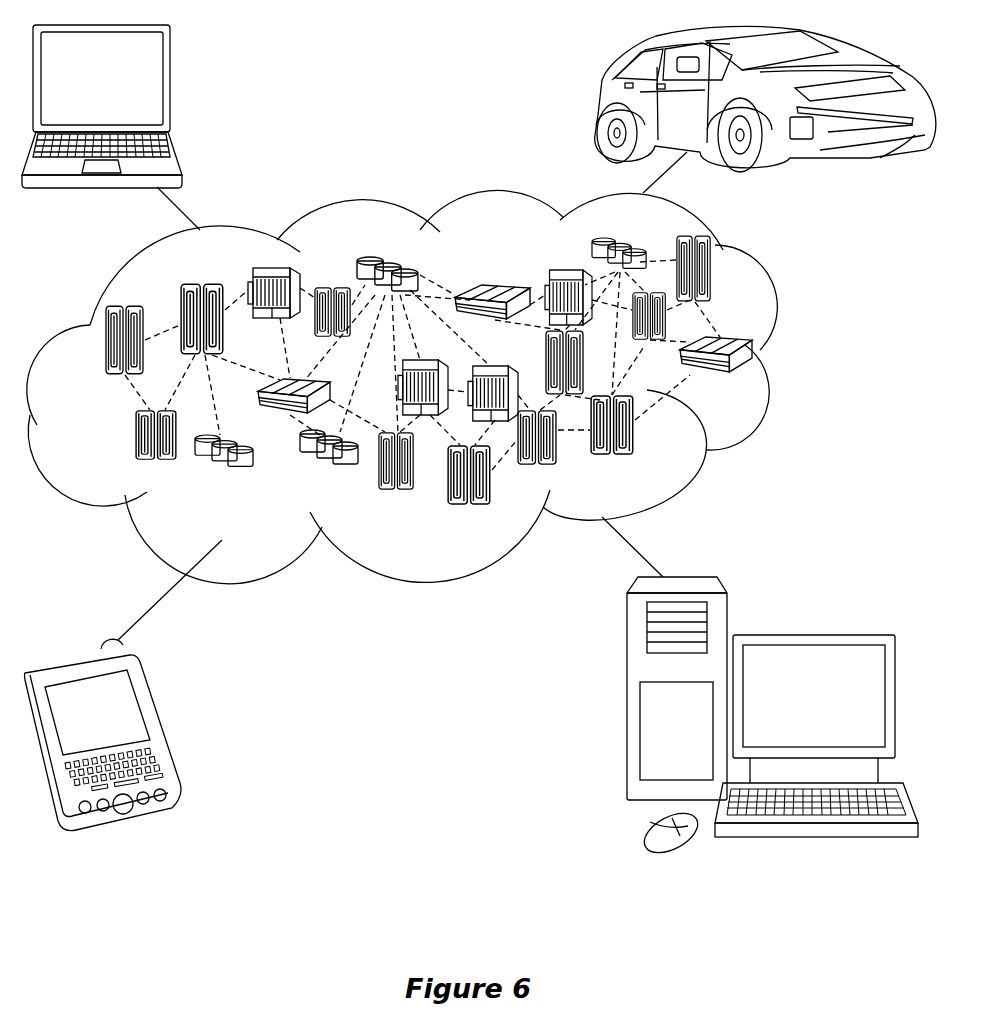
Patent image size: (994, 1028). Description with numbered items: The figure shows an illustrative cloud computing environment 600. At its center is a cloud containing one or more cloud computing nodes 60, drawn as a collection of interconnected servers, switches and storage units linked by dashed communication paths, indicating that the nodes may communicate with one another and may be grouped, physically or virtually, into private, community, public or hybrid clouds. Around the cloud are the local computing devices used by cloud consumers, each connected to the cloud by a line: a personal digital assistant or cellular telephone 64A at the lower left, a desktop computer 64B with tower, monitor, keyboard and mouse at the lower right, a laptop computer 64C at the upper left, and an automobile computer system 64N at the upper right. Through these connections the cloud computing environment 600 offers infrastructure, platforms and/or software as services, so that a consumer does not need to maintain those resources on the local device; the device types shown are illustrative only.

The laptop computer 64C is at (172, 86).
The automobile computer system 64N is at (600, 103).
The personal digital assistant (PDA) or cellular telephone 64A is at (160, 727).
The desktop computer 64B is at (810, 633).
The cloud computing nodes 60 is at (802, 352).
The cloud computing environment 600 is at (762, 386).